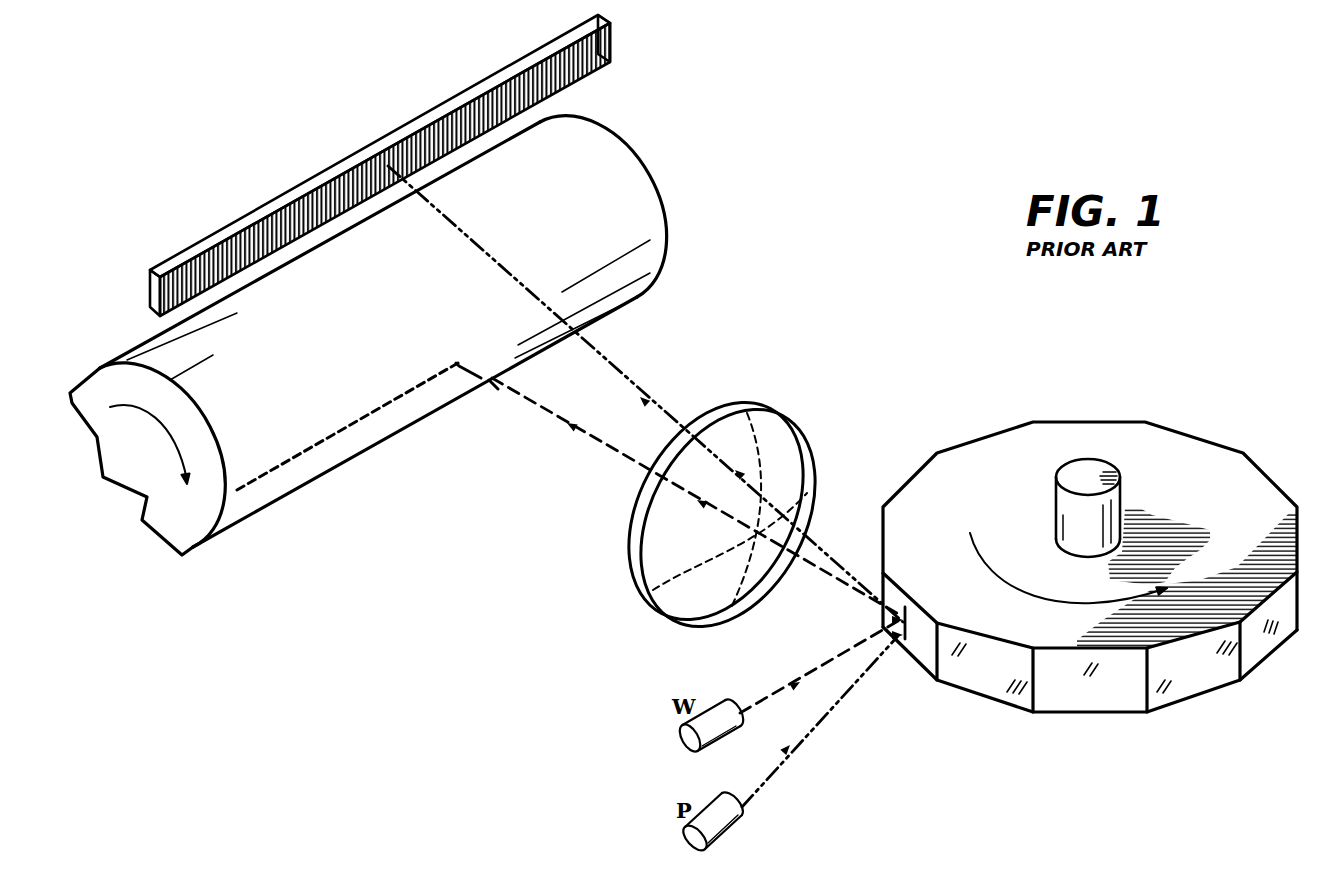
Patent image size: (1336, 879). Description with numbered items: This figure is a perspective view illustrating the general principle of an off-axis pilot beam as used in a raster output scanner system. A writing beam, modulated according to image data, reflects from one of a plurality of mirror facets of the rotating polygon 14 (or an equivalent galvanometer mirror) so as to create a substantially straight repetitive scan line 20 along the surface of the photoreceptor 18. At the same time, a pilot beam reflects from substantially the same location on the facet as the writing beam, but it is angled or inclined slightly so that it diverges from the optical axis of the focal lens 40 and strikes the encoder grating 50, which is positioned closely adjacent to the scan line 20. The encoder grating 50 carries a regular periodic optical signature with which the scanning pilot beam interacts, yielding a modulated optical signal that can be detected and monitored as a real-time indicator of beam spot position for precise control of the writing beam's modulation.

The encoder grating 50 is at (612, 32).
The photoreceptor 18 is at (619, 188).
The scan line 20 is at (300, 453).
The focal lens 40 is at (747, 410).
The rotating polygon 14 is at (998, 445).